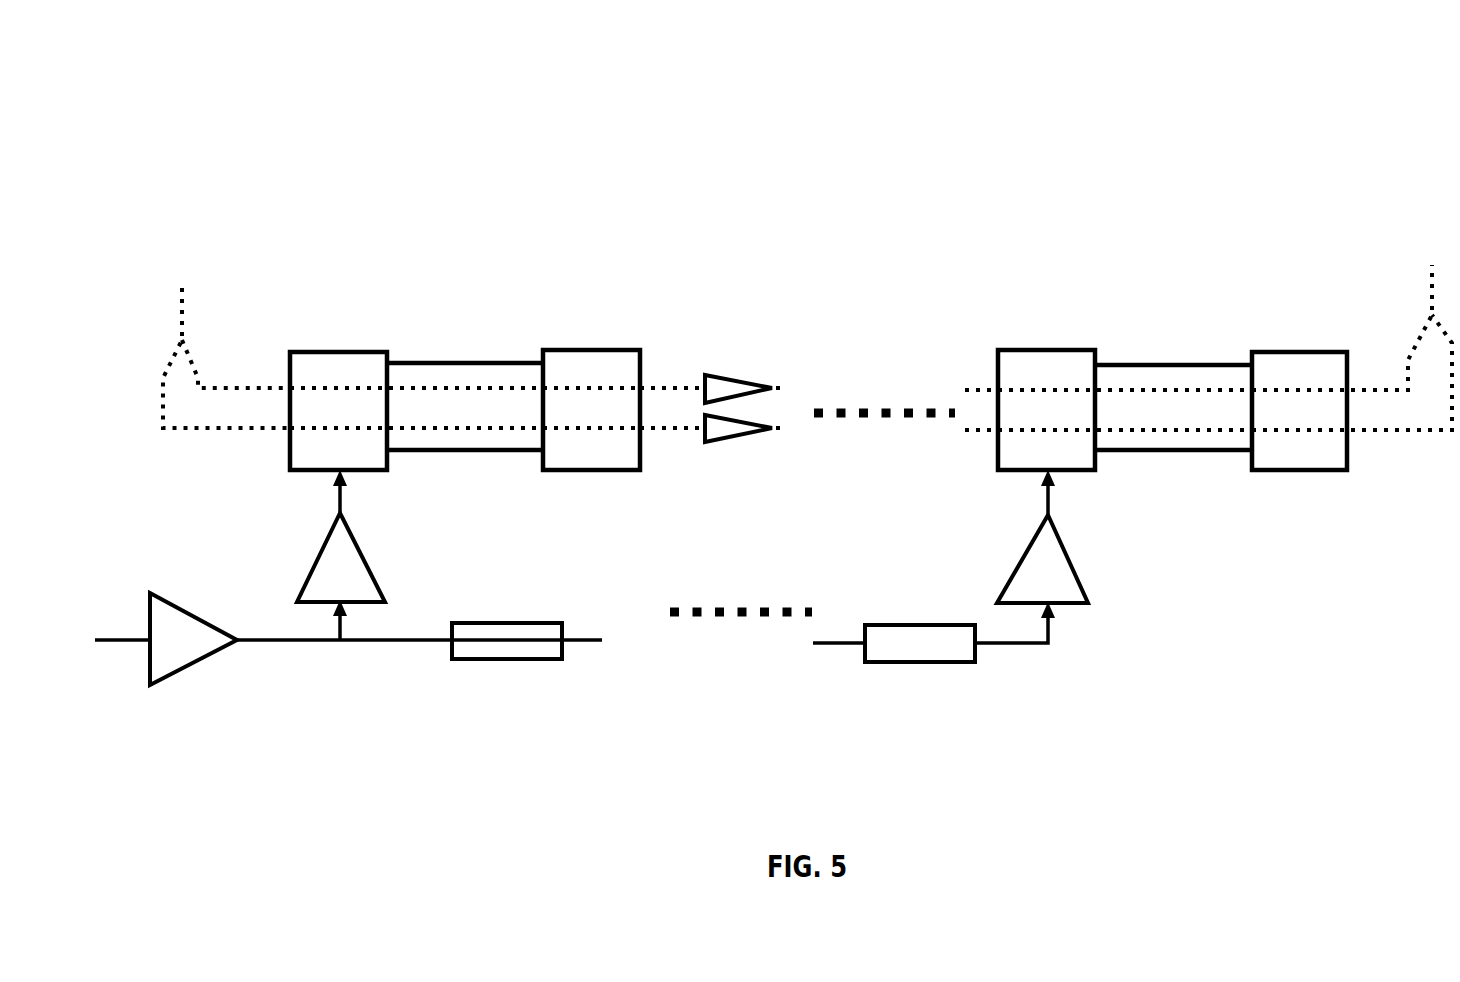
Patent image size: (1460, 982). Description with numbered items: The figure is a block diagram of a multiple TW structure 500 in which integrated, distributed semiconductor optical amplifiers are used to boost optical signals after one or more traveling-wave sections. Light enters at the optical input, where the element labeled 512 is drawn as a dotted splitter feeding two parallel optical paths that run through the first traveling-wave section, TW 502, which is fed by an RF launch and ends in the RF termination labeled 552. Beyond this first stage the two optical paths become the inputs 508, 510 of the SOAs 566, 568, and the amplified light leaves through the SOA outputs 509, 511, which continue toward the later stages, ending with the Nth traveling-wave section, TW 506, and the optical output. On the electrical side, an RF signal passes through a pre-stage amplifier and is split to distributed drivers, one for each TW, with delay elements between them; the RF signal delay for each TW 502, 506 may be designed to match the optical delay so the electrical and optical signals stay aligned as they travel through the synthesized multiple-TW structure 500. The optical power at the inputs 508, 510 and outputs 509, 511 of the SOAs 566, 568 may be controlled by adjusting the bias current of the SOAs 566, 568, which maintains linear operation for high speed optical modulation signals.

The multiple TW structure 500 is at (1306, 136).
The TW 502 is at (495, 363).
The TW 506 is at (1207, 365).
The input of SOA 508 is at (667, 388).
The output of SOA 509 is at (783, 390).
The input of SOA 510 is at (668, 430).
The output of SOA 511 is at (783, 430).
The optical input splitter 512 is at (230, 243).
The RF termination 552 is at (640, 350).
The SOA 566 is at (772, 388).
The SOA 568 is at (753, 435).